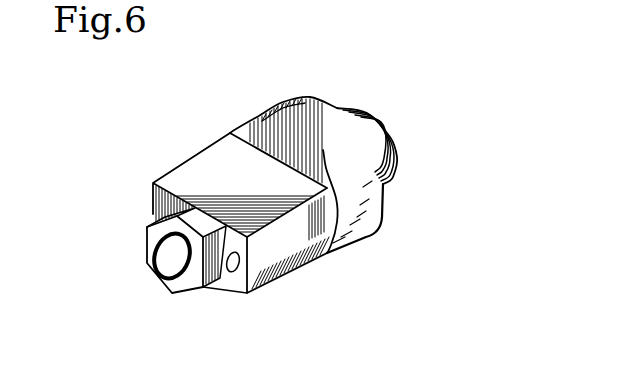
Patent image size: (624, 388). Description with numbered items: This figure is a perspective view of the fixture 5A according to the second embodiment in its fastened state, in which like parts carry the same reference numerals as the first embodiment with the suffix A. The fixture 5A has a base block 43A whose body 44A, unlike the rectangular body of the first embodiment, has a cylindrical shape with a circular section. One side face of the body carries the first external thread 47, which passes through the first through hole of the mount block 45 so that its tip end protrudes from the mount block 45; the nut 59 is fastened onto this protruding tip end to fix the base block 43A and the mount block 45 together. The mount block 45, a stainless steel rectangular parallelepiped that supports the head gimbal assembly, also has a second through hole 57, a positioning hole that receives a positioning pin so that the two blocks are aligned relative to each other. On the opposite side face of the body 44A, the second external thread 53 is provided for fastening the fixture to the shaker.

The mount block 45 is at (181, 164).
The fixture 5A is at (253, 114).
The base block 43A is at (310, 95).
The body 44A is at (334, 109).
The second external thread 53 is at (383, 131).
The first external thread 47 is at (170, 264).
The nut 59 is at (190, 294).
The second through hole 57 is at (235, 273).